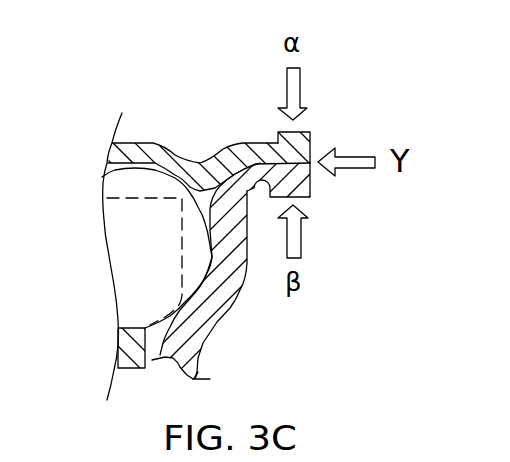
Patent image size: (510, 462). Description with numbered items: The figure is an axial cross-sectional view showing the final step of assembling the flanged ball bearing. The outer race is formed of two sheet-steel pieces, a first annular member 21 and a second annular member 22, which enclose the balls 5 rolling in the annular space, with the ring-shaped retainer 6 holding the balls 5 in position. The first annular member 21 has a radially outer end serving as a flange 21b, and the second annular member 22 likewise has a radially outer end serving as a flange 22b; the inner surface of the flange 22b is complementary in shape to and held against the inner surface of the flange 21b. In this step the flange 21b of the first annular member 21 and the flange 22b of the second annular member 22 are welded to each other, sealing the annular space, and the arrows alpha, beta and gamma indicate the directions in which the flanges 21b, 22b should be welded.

The balls 5 is at (117, 183).
The ring-shaped retainer 6 is at (136, 262).
The first annular member 21 is at (213, 150).
The flange 21b is at (304, 142).
The second annular member 22 is at (218, 312).
The flange 22b is at (305, 188).